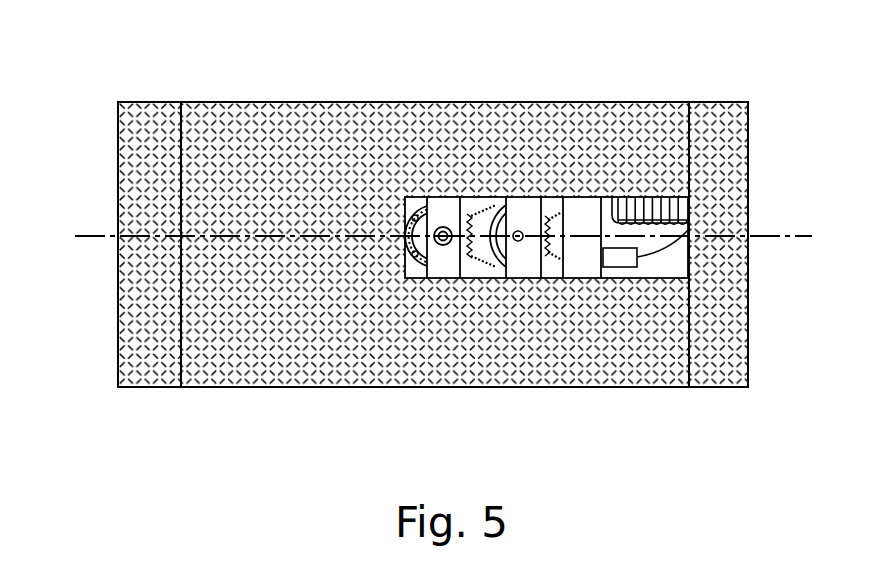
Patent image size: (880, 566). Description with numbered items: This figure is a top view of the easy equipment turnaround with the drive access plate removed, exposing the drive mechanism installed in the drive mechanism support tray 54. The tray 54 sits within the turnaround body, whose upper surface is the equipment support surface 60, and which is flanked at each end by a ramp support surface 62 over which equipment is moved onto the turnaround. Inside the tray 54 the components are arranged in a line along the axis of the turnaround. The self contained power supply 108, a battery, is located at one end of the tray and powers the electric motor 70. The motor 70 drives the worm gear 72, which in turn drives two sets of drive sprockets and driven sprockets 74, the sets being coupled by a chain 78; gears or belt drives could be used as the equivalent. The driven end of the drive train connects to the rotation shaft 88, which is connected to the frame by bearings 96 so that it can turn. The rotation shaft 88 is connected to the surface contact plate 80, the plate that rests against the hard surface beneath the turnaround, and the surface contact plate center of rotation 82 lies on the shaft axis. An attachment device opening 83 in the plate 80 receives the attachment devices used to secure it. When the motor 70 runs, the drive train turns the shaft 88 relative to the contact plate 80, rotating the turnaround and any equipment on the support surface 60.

The drive mechanism support tray 54 is at (662, 262).
The equipment support surface 60 is at (238, 350).
The ramp support surface 62 is at (148, 305).
The electric motor 70 is at (615, 260).
The worm gear 72 is at (575, 262).
The driven sprocket 74 is at (420, 218).
The chain 78 is at (477, 205).
The surface contact plate 80 is at (418, 256).
The surface contact plate center of rotation 82 is at (445, 244).
The attachment device opening 83 is at (405, 233).
The rotation shaft 88 is at (443, 228).
The bearing 96 is at (466, 260).
The self contained power supply 108 is at (648, 197).